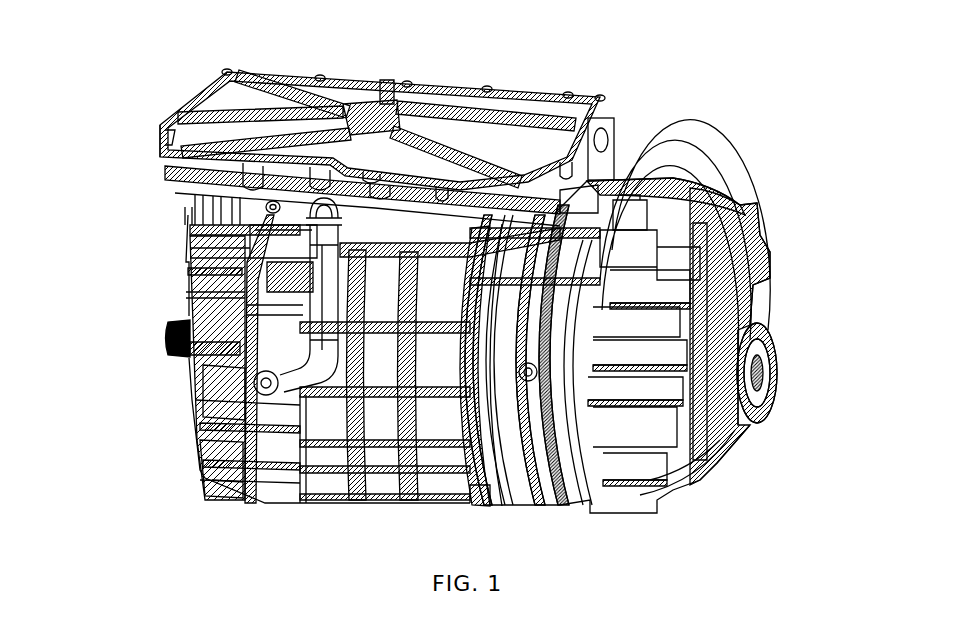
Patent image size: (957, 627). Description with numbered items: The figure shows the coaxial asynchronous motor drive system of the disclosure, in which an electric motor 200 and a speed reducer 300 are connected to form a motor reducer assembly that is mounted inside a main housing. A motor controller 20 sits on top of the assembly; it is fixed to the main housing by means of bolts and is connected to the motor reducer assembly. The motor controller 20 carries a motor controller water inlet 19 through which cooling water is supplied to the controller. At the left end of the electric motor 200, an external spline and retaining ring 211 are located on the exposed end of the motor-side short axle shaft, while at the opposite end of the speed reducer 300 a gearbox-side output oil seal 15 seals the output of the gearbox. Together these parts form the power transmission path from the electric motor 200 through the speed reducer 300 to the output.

The motor controller 20 is at (225, 72).
The motor controller water inlet 19 is at (327, 300).
The speed reducer 300 is at (697, 203).
The gearbox-side output oil seal 15 is at (780, 348).
The external spline and retaining ring on an exposed end of the motor-side short axl 211 is at (172, 355).
The electric motor 200 is at (250, 500).